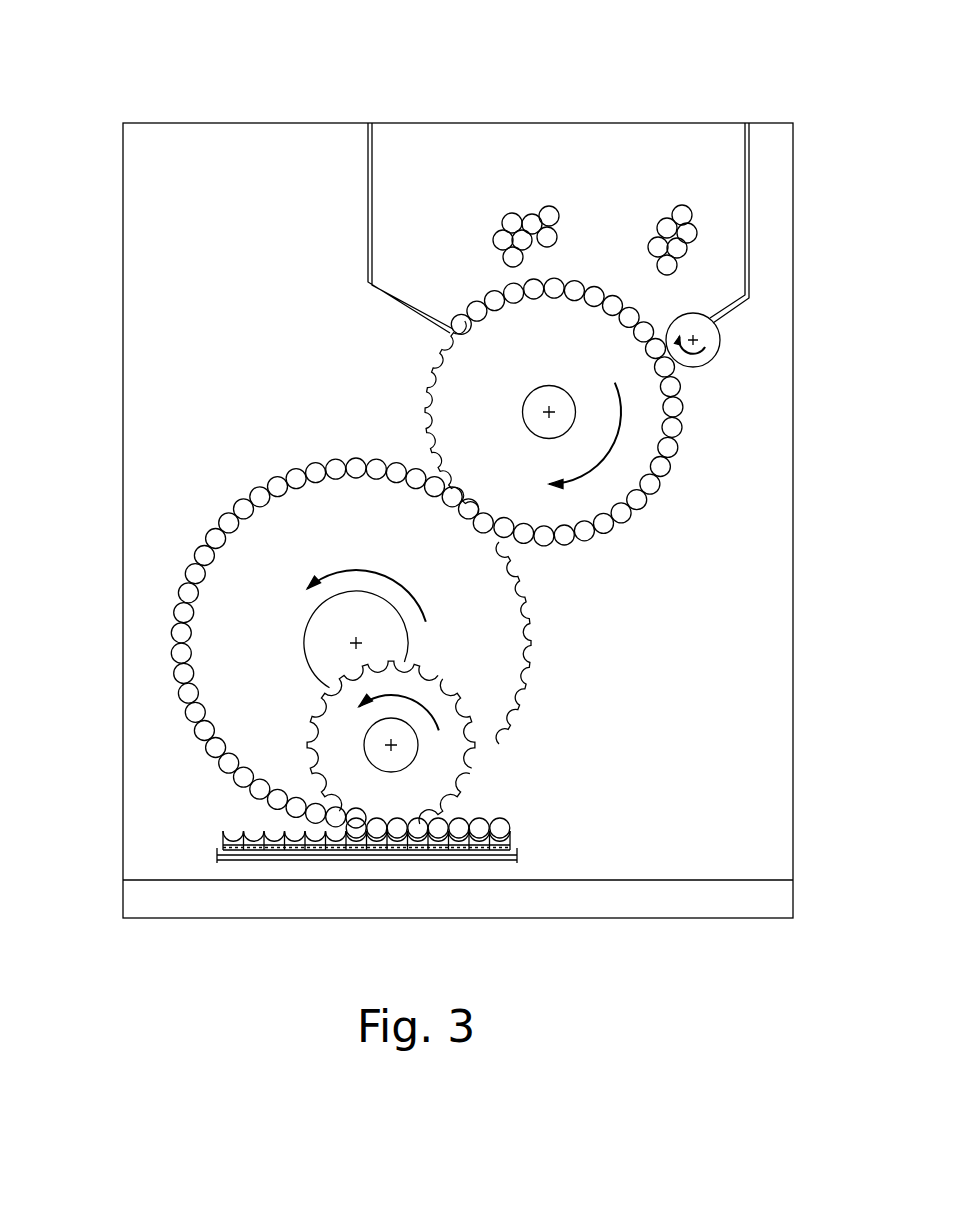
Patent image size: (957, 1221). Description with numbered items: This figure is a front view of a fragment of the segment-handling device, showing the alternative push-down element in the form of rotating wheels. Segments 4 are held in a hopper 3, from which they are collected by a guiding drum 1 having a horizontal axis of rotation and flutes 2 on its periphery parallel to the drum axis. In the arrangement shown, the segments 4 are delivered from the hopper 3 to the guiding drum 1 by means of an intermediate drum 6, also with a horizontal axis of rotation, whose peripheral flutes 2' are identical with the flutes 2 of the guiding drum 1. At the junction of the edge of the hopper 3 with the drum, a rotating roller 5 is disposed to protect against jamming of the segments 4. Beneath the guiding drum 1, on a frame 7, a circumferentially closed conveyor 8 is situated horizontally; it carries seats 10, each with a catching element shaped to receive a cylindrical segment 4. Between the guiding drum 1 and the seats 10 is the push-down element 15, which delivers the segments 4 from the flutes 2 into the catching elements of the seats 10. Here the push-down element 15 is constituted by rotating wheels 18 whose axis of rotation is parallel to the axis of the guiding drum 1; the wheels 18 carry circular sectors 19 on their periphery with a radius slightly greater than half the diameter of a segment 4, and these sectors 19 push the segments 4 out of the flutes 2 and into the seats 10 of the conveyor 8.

The guiding drum 1 is at (255, 610).
The flutes 2 is at (576, 603).
The flutes 2' is at (330, 365).
The hopper 3 is at (626, 178).
The segments 4 is at (514, 219).
The rotating roller 5 is at (705, 332).
The intermediate drum 6 is at (640, 447).
The frame 7 is at (348, 910).
The conveyor 8 is at (252, 857).
The seats 10 is at (222, 837).
The push-down element 15 is at (455, 800).
The rotating wheels 18 is at (450, 752).
The circular sectors 19 is at (463, 712).